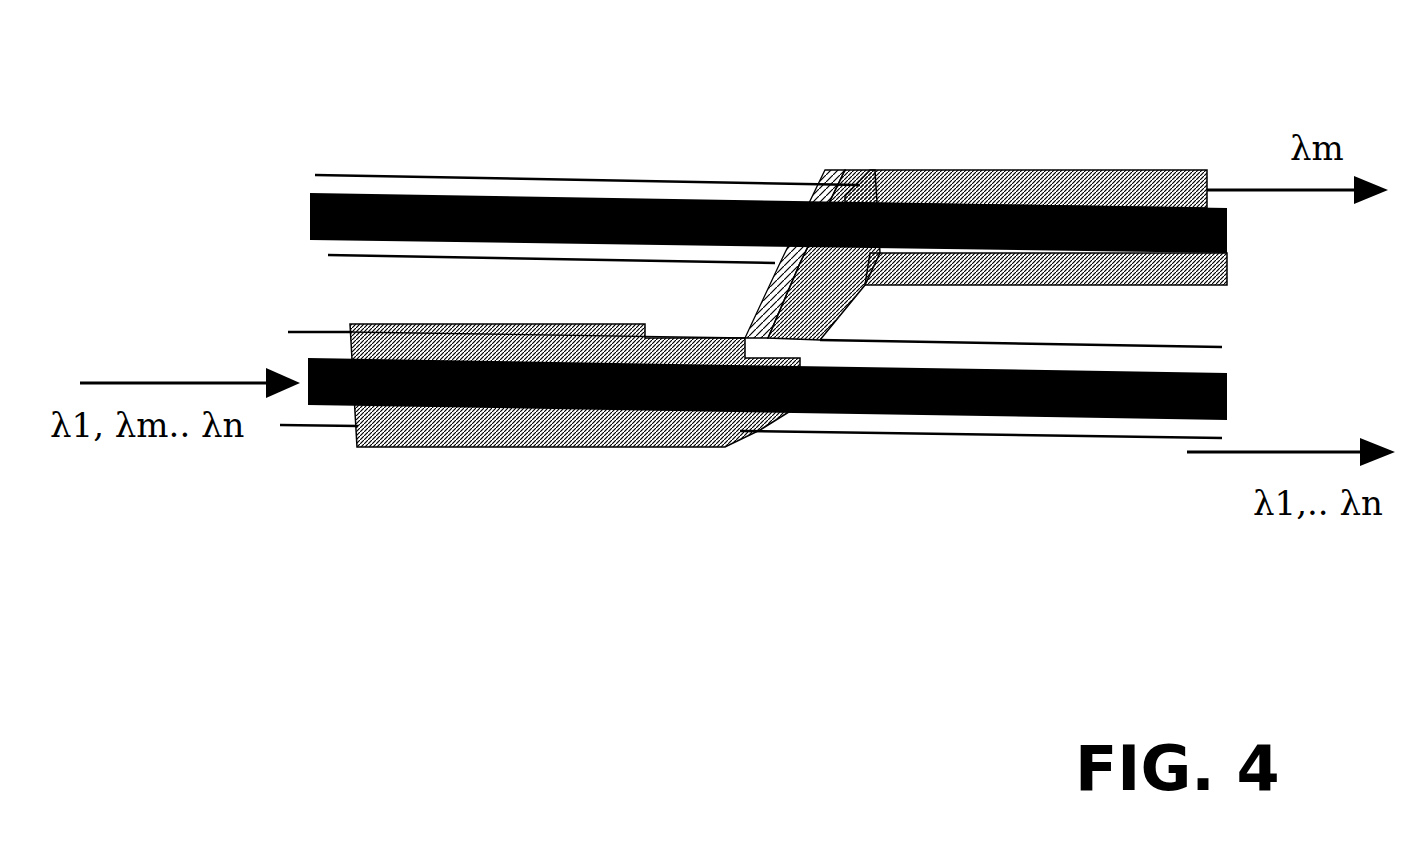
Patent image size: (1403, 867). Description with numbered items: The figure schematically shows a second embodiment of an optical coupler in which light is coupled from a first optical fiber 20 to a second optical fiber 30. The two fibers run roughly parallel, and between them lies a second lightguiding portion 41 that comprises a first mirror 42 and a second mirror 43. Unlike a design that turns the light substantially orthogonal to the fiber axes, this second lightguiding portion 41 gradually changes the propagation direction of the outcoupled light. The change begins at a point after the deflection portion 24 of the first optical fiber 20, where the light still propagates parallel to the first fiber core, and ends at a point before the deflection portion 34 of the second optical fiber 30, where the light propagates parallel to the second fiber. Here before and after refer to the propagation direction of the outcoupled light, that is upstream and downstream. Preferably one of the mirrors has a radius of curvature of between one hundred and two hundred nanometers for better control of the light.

The first optical fiber 20 is at (318, 314).
The second optical fiber 30 is at (362, 160).
The deflection portion of the first fiber 24 is at (647, 482).
The deflection portion of the second fiber 34 is at (1202, 133).
The second lightguiding portion 41 is at (798, 350).
The first mirror 42 is at (750, 301).
The second mirror 43 is at (865, 290).